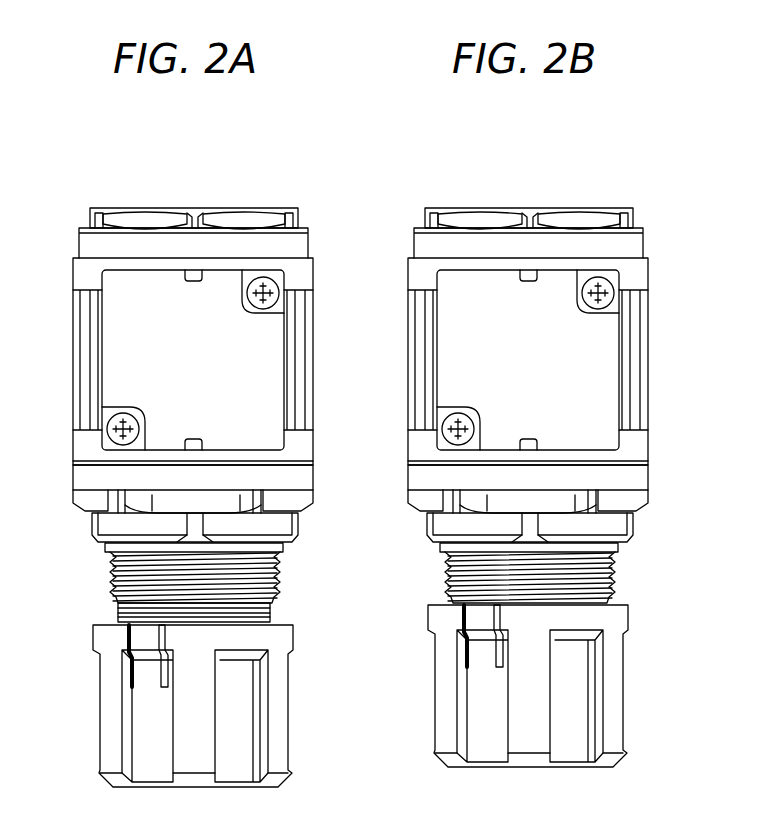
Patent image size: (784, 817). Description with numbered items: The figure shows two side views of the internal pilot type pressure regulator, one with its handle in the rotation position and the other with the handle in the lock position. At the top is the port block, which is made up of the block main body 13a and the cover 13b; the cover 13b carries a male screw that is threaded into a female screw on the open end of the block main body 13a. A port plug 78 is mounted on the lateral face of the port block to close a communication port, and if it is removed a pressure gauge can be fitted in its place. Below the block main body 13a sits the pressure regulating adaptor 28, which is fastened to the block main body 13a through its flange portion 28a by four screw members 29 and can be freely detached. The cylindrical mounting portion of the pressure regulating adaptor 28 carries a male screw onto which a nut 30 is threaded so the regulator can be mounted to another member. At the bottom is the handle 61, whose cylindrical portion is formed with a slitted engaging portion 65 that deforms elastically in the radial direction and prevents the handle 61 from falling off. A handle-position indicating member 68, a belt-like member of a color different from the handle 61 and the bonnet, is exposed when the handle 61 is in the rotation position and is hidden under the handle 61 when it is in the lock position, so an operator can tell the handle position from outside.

In FIG. 2A, the block main body 13a is at (290, 445).
In FIG. 2B, the block main body 13a is at (637, 442).
In FIG. 2A, the cover 13b is at (192, 227).
In FIG. 2B, the cover 13b is at (523, 225).
In FIG. 2A, the port plug 78 is at (123, 355).
In FIG. 2B, the port plug 78 is at (585, 366).
In FIG. 2A, the flange portion 28a is at (110, 479).
In FIG. 2B, the flange portion 28a is at (623, 478).
In FIG. 2A, the screw member 29 is at (305, 495).
In FIG. 2B, the screw member 29 is at (635, 495).
In FIG. 2A, the nut 30 is at (108, 527).
In FIG. 2B, the nut 30 is at (603, 528).
In FIG. 2A, the pressure regulating adaptor 28 is at (106, 575).
In FIG. 2B, the pressure regulating adaptor 28 is at (619, 570).
In FIG. 2A, the handle-position indicating member 68 is at (266, 620).
In FIG. 2A, the engaging portion 65 is at (140, 637).
In FIG. 2B, the engaging portion 65 is at (482, 617).
In FIG. 2A, the handle 61 is at (110, 708).
In FIG. 2B, the handle 61 is at (607, 703).